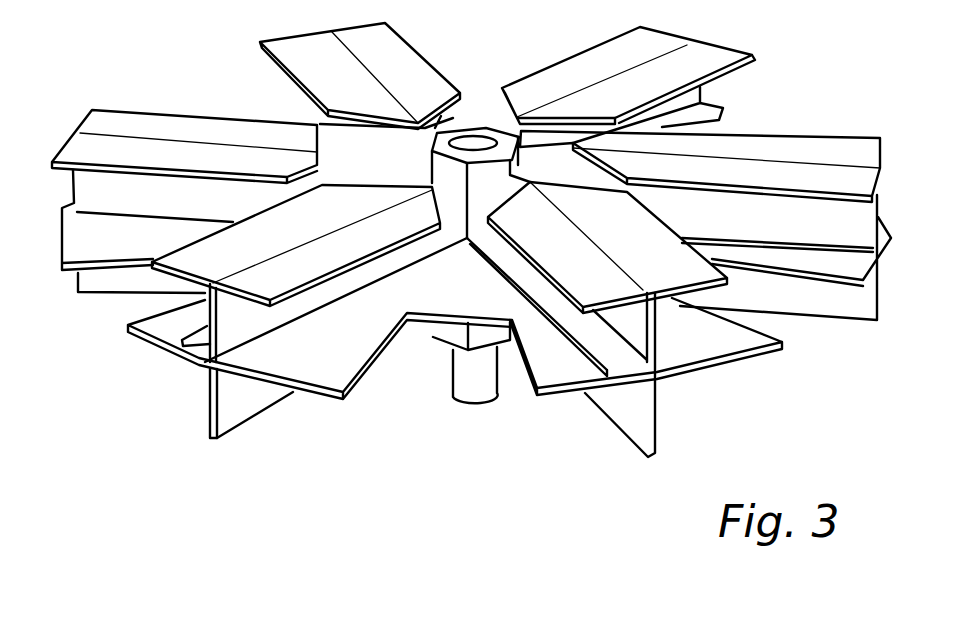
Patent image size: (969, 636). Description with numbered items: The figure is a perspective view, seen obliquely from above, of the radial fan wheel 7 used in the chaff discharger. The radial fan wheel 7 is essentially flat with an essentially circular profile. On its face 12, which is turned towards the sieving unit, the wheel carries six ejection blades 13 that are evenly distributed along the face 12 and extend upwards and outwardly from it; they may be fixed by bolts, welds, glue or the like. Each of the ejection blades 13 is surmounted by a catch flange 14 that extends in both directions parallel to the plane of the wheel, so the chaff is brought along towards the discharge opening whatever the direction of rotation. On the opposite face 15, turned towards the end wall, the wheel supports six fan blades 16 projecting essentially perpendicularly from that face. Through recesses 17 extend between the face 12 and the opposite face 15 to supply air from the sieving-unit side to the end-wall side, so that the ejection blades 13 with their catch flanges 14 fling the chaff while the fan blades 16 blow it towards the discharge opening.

The radial fan wheel 7 is at (466, 309).
The face 12 is at (327, 363).
The ejection blades 13 is at (236, 312).
The catch flanges 14 is at (153, 262).
The opposite face 15 is at (287, 390).
The fan blades 16 is at (235, 408).
The through recesses 17 is at (413, 375).